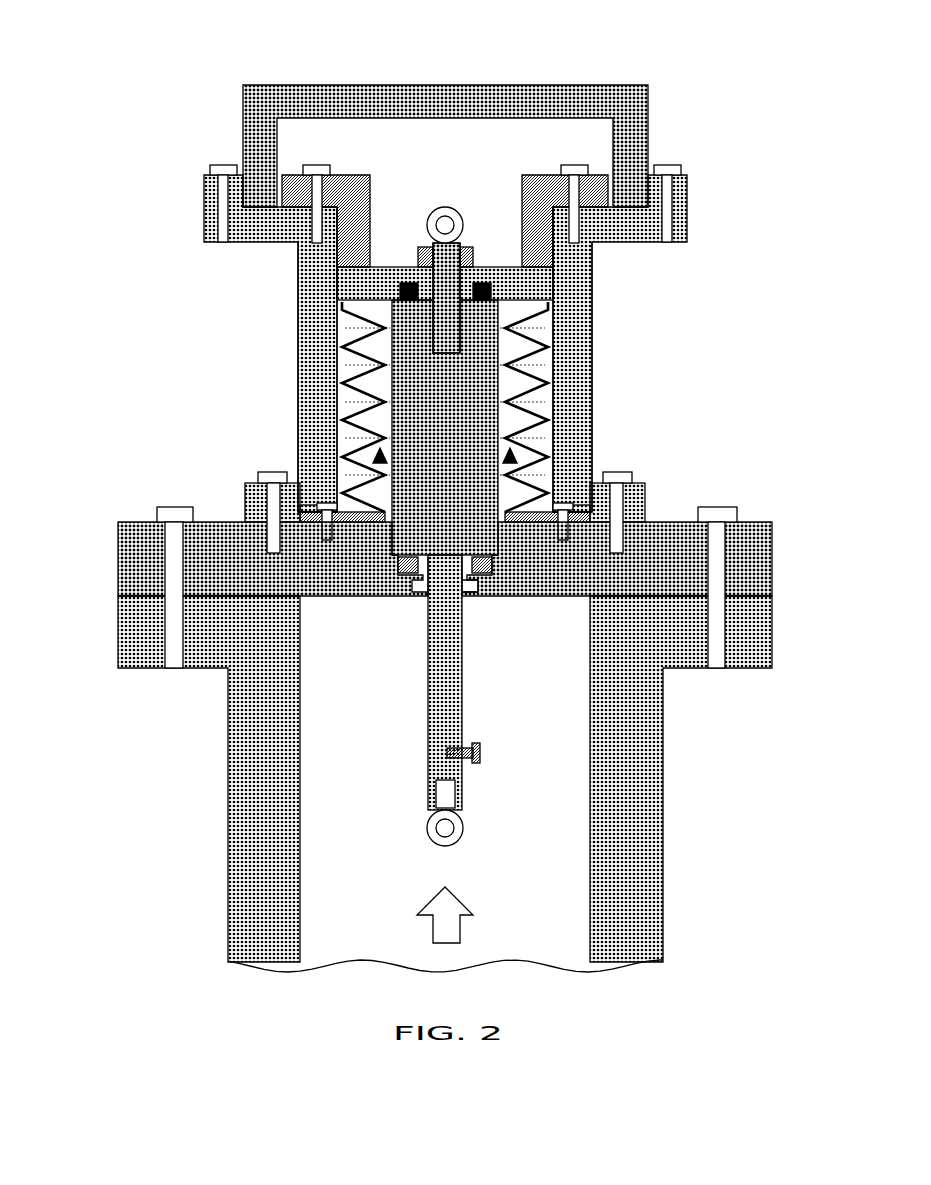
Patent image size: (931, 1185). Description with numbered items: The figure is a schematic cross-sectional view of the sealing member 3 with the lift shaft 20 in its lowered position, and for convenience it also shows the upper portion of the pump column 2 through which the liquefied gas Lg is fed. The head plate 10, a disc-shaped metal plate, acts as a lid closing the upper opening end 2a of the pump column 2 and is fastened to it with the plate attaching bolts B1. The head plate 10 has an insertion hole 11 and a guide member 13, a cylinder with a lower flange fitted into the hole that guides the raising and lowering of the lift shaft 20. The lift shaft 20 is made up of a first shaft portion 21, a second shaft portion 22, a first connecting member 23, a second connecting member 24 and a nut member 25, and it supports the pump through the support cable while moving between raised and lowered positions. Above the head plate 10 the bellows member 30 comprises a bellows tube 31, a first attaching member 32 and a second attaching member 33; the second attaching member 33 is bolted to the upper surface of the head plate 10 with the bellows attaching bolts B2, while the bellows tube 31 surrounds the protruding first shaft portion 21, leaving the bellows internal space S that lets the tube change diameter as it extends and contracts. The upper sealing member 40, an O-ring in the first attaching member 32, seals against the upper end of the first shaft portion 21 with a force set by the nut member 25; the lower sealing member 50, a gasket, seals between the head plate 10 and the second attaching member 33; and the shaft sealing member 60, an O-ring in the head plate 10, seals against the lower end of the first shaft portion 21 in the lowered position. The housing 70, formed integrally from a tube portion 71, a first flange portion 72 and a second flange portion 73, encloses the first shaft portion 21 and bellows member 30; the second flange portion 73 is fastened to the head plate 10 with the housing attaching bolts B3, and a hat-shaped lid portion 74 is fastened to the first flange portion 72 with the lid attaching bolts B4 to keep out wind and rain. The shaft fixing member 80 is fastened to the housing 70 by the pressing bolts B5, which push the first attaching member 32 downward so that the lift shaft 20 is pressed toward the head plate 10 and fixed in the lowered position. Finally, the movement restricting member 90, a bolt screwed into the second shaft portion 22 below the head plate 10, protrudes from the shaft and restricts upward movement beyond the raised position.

The pump column 2 is at (440, 784).
The upper opening end 2a is at (364, 620).
The sealing member 3 is at (142, 70).
The head plate 10 is at (407, 559).
The insertion hole 11 is at (448, 585).
The guide member 13 is at (484, 608).
The lift shaft 20 is at (410, 656).
The first shaft portion 21 is at (458, 449).
The second shaft portion 22 is at (476, 682).
The first connecting member 23 is at (445, 188).
The second connecting member 24 is at (474, 853).
The nut member 25 is at (427, 276).
The bellows member 30 is at (668, 300).
The bellows tube 31 is at (503, 407).
The first attaching member 32 is at (500, 300).
The second attaching member 33 is at (482, 459).
The upper sealing member 40 is at (456, 258).
The lower sealing member 50 is at (517, 584).
The shaft sealing member 60 is at (400, 600).
The housing 70 is at (122, 135).
The tube portion 71 is at (358, 359).
The first flange portion 72 is at (405, 343).
The second flange portion 73 is at (384, 472).
The lid portion 74 is at (386, 146).
The shaft fixing member 80 is at (445, 200).
The movement restricting member 90 is at (496, 766).
The plate attaching bolts B1 is at (462, 587).
The bellows attaching bolts B2 is at (442, 465).
The housing attaching bolts B3 is at (466, 487).
The lid attaching bolts B4 is at (478, 198).
The pressing bolts B5 is at (452, 185).
The bellows internal space S is at (367, 524).
The liquefied gas Lg is at (445, 931).